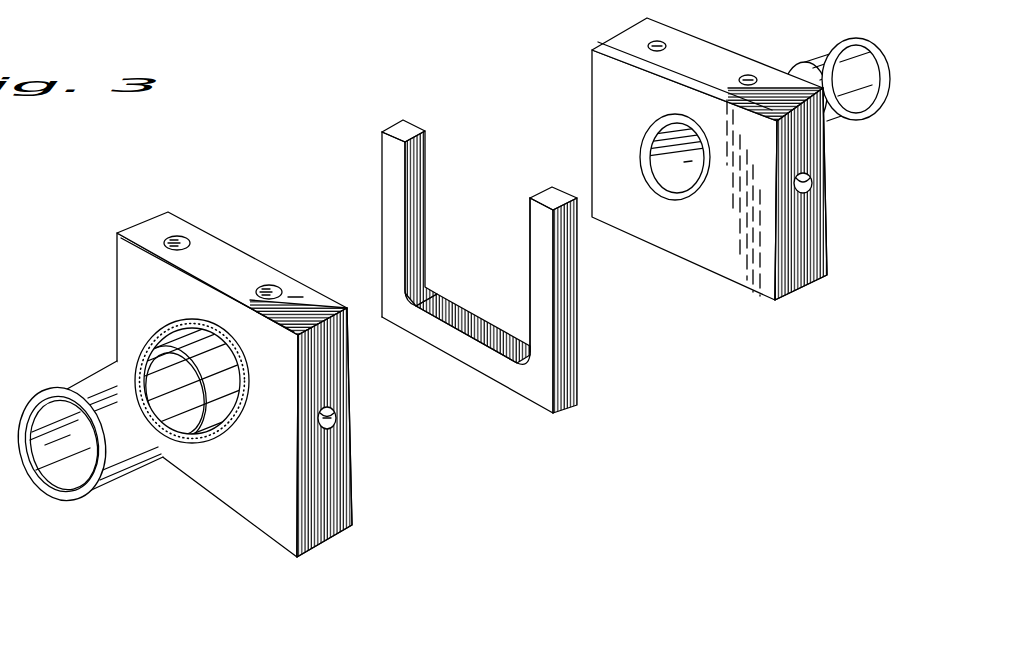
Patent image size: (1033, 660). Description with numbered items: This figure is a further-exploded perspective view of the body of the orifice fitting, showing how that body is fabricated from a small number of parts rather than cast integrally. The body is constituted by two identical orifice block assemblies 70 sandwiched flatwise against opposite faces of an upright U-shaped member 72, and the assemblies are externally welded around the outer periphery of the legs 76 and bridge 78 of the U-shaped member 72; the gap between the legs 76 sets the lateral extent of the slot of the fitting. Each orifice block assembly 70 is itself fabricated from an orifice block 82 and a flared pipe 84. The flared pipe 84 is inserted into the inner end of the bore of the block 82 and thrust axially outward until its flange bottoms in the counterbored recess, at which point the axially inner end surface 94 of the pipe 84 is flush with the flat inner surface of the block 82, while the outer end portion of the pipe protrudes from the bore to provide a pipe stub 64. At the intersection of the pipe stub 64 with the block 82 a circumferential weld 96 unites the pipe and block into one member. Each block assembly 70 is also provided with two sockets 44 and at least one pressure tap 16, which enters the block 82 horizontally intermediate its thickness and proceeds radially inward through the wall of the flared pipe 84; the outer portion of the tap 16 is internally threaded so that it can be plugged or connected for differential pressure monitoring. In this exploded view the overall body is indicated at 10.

The block assembly 10 is at (735, 182).
The pressure tap 16 is at (812, 192).
The socket 44 is at (655, 44).
The pipe stub 64 is at (64, 384).
The orifice block assembly 70 is at (199, 402).
The U-shaped member 72 is at (458, 296).
The legs 76 is at (385, 232).
The bridge 78 is at (470, 357).
The orifice block 82 is at (337, 481).
The flared pipe 84 is at (782, 63).
The axially inner end surface 94 is at (683, 201).
The circumferential weld 96 is at (227, 437).